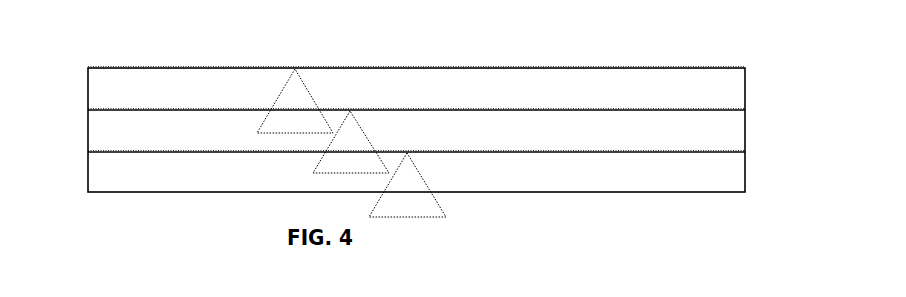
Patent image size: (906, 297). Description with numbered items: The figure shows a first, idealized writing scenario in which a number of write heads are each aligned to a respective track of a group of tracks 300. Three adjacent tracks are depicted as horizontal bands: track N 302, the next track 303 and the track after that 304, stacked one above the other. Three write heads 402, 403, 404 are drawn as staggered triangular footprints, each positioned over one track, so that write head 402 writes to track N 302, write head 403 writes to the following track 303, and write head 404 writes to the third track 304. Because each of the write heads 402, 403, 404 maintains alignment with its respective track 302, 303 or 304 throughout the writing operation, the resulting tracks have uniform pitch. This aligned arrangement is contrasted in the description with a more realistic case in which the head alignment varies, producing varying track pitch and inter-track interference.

The storage medium track set 300 is at (83, 68).
The track N 302 is at (752, 68).
The track N+1 303 is at (752, 110).
The track N+2 304 is at (752, 152).
The write head 402 is at (307, 100).
The write head 403 is at (363, 137).
The write head 404 is at (418, 183).